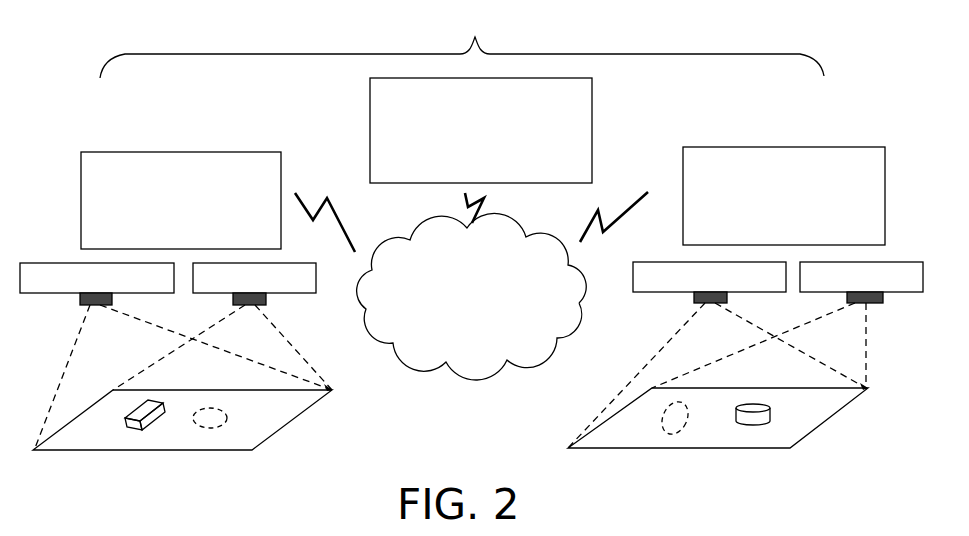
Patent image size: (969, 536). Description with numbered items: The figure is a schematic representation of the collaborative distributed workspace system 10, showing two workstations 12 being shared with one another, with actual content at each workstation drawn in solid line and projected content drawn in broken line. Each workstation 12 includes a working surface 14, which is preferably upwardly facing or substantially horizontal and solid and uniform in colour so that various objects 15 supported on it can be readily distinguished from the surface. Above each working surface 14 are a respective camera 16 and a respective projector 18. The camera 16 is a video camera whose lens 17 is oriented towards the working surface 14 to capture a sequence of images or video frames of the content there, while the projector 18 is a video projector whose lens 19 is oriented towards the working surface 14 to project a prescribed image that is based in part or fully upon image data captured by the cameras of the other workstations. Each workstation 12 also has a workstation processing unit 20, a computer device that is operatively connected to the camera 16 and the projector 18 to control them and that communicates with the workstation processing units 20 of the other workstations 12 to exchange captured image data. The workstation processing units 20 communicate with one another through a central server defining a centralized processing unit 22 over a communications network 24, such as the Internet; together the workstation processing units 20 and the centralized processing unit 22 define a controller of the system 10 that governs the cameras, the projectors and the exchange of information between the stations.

The collaborative distributed workspace system 10 is at (462, 46).
The workstation 12 is at (162, 136).
The working surface 14 is at (278, 412).
The object 15 is at (137, 426).
The camera 16 is at (312, 278).
The lens 17 is at (250, 305).
The projector 18 is at (36, 290).
The lens 19 is at (82, 306).
The workstation processing unit 20 is at (205, 162).
The centralized processing unit 22 is at (572, 118).
The communications network 24 is at (478, 350).